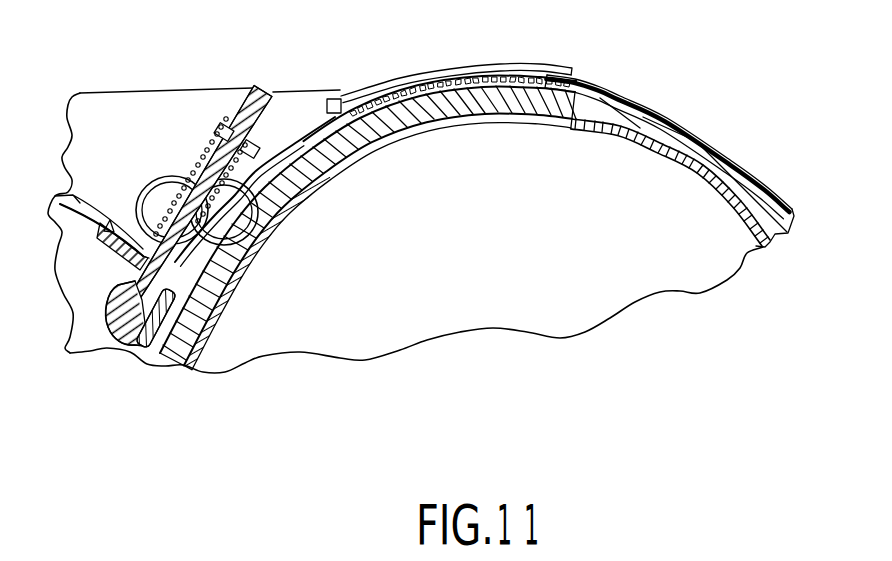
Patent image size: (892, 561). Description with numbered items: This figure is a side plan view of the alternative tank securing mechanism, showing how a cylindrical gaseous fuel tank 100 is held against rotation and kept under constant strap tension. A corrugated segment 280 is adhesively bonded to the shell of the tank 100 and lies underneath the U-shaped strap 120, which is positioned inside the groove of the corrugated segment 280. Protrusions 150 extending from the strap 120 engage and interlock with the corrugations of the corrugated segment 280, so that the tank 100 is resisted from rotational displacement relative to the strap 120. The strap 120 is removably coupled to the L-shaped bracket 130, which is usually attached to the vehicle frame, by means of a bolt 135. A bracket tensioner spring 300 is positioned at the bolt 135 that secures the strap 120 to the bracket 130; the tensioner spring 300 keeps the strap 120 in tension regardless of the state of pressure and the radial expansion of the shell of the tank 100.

The gaseous fuel tank 100 is at (741, 193).
The U-shaped strap 120 is at (303, 160).
The L-shaped bracket 130 is at (177, 293).
The bolt 135 is at (126, 328).
The protrusions 150 is at (543, 77).
The corrugated segment 280 is at (385, 127).
The bracket tensioner spring 300 is at (247, 160).